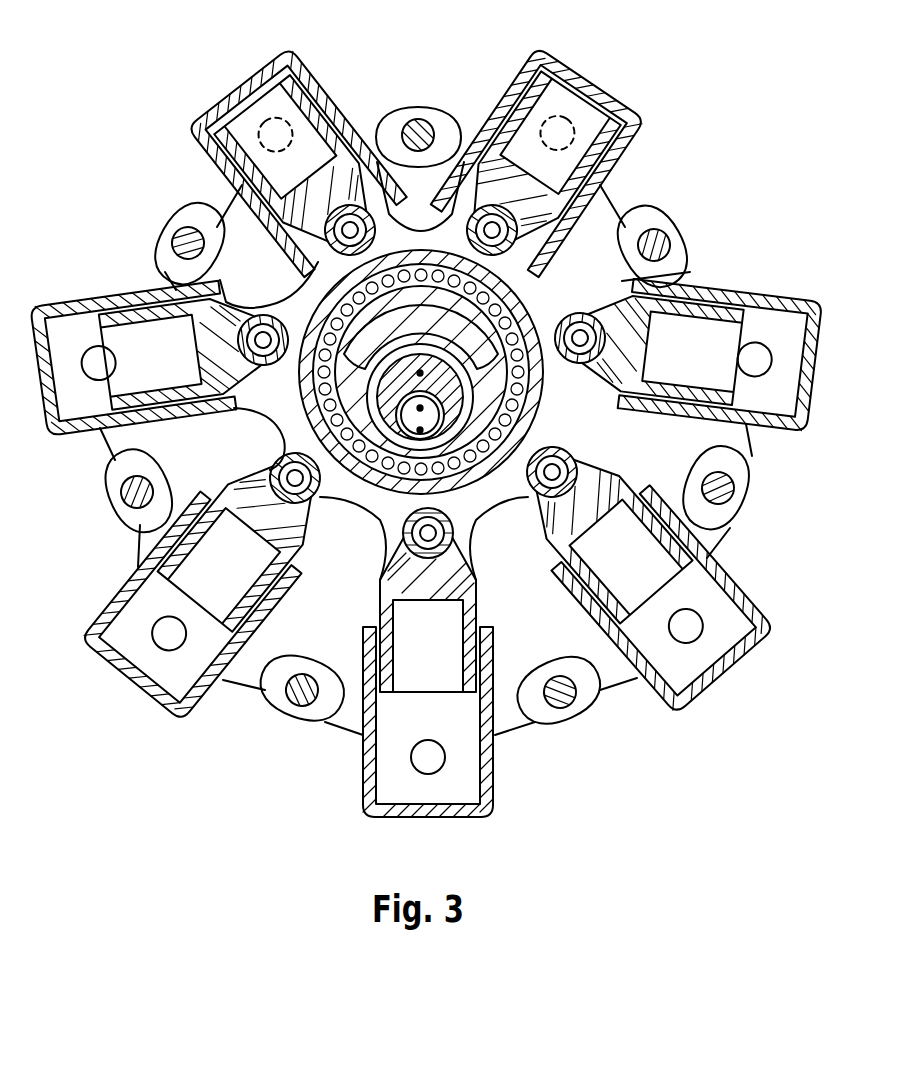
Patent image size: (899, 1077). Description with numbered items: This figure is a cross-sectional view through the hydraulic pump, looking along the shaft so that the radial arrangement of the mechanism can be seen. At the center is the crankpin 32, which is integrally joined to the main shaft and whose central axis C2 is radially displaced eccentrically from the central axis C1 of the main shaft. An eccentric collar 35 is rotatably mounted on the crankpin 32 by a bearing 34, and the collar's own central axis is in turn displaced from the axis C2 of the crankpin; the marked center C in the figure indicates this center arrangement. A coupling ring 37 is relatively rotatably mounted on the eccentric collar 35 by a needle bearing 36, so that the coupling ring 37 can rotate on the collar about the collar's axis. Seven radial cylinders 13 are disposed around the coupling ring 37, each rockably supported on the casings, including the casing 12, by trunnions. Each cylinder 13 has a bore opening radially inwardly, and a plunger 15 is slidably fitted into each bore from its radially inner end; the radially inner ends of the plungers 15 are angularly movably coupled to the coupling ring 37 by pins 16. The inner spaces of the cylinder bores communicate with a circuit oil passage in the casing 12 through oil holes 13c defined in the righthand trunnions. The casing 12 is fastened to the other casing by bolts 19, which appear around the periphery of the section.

The casing 12 is at (108, 446).
The radial cylinder 13 is at (263, 57).
The oil hole 13c is at (222, 106).
The plunger 15 is at (310, 97).
The pin 16 is at (330, 212).
The bolt 19 is at (424, 120).
The crankpin 32 is at (486, 509).
The bearing 34 is at (393, 541).
The eccentric collar 35 is at (295, 407).
The needle bearing 36 is at (362, 502).
The coupling ring 37 is at (300, 298).
The main axis center C is at (420, 370).
The central axis of the main shaft C1 is at (433, 414).
The central axis of the crankpin C2 is at (415, 407).